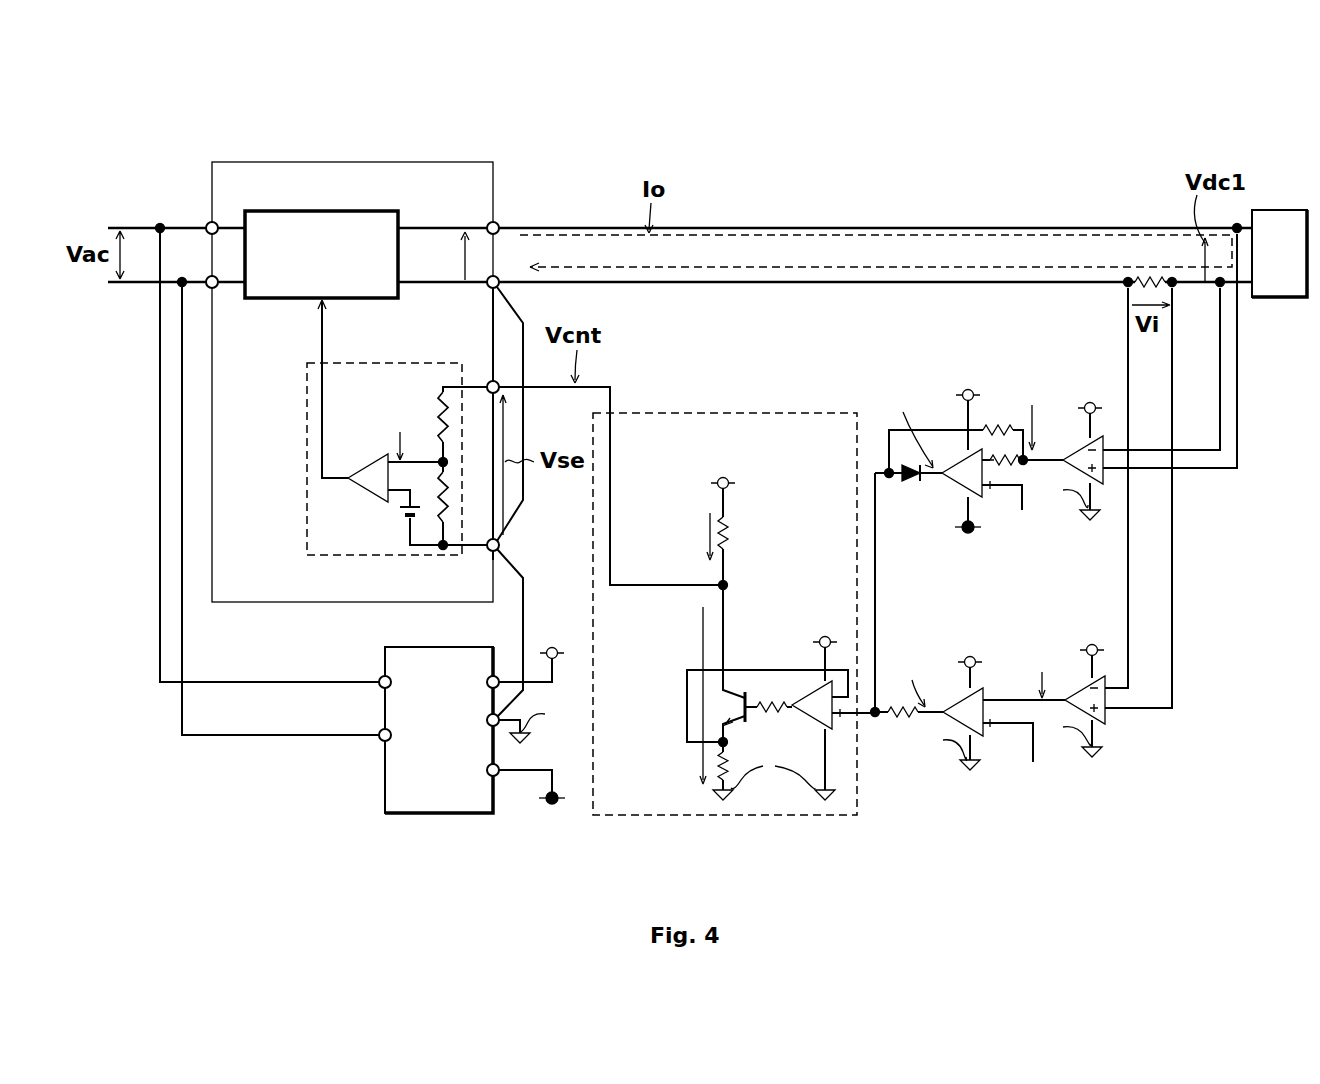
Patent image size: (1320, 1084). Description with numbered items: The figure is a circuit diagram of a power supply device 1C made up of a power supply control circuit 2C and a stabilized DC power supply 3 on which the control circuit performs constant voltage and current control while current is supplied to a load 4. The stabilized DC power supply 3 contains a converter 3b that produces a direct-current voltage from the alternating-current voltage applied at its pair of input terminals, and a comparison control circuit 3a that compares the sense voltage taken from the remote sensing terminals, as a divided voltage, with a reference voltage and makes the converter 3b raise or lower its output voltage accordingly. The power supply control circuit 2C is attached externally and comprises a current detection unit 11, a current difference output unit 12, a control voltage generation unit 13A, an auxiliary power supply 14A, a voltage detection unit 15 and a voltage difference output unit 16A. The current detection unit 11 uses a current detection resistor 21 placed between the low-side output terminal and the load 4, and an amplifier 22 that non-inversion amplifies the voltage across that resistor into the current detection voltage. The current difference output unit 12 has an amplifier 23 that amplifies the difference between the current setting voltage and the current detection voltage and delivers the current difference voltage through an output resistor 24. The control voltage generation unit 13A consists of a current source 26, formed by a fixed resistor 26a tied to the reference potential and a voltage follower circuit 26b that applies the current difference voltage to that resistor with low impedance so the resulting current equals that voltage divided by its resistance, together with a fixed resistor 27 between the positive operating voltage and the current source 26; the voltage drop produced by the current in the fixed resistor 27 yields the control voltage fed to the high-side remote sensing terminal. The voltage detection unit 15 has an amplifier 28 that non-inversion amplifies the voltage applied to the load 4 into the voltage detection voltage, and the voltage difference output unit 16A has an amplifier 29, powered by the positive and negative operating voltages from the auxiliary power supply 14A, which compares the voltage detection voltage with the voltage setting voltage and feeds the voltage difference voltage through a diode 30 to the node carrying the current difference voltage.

The power supply device 1C is at (628, 109).
The stabilized DC power supply 3 is at (425, 162).
The comparison control circuit 3a is at (377, 363).
The converter 3b is at (363, 211).
The load 4 is at (1277, 210).
The control voltage generation unit 13A is at (803, 413).
The auxiliary power supply 14A is at (437, 647).
The current detection resistor 21 is at (1148, 275).
The amplifier 22 is at (1062, 762).
The amplifier 23 is at (960, 694).
The output resistor 24 is at (900, 718).
The current source 26 is at (780, 618).
The fixed resistor 26a is at (717, 754).
The voltage follower circuit 26b is at (788, 698).
The fixed resistor 27 is at (730, 534).
The amplifier 28 is at (1085, 444).
The amplifier 29 is at (960, 450).
The diode 30 is at (908, 481).
The voltage detection unit 15 is at (1129, 403).
The voltage difference output unit 16A is at (958, 539).
The current difference output unit 12 is at (970, 725).
The current detection unit 11 is at (1110, 712).
The power supply control circuit 2C is at (1177, 826).